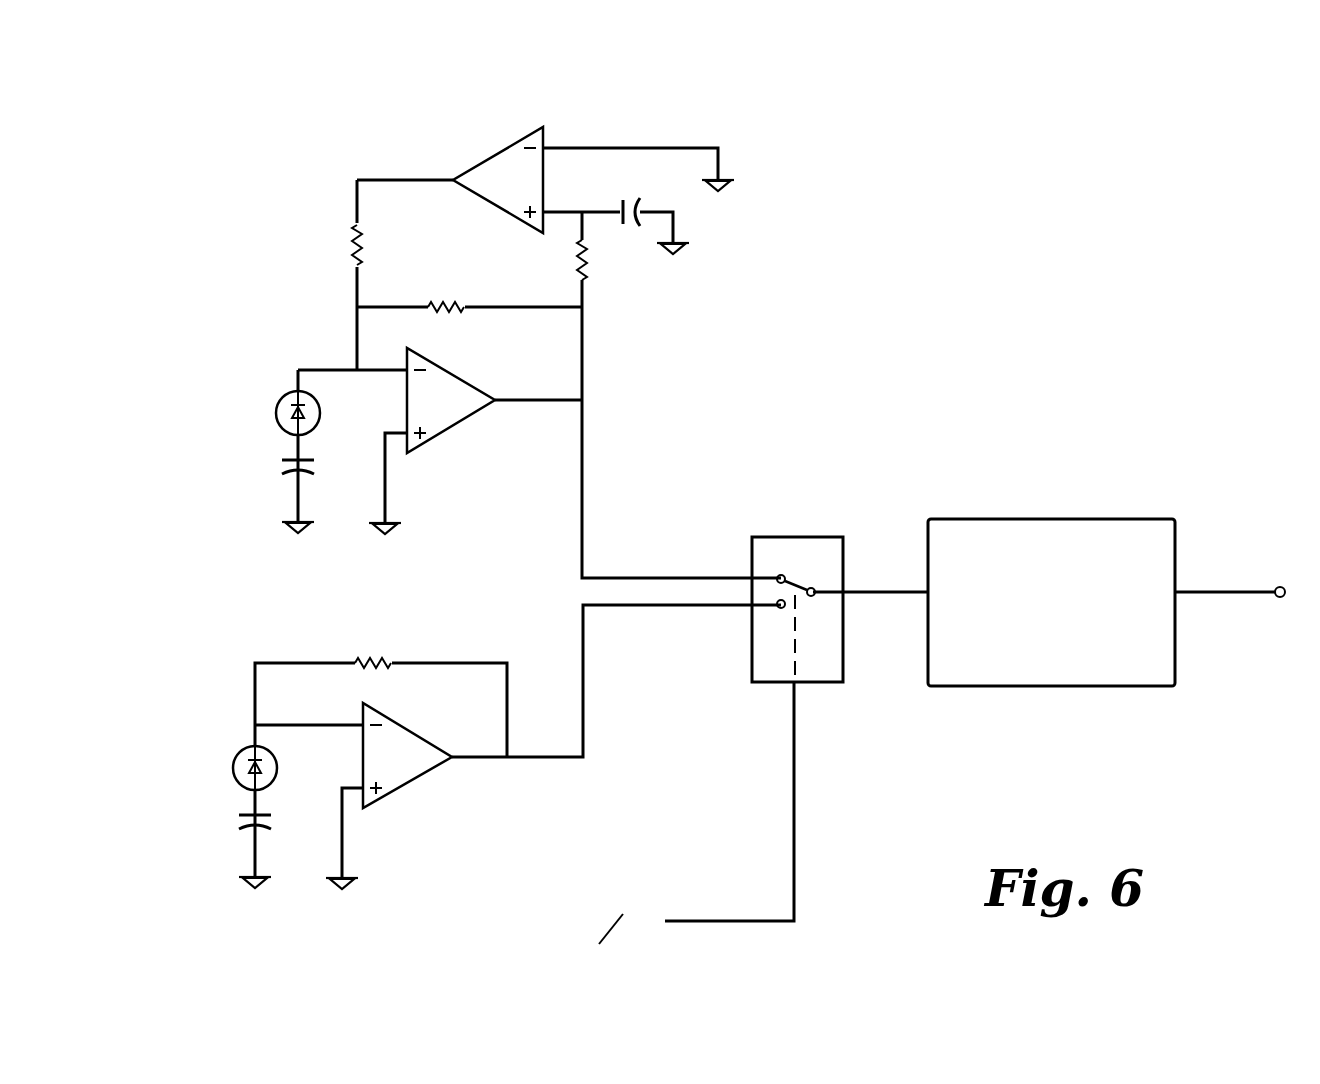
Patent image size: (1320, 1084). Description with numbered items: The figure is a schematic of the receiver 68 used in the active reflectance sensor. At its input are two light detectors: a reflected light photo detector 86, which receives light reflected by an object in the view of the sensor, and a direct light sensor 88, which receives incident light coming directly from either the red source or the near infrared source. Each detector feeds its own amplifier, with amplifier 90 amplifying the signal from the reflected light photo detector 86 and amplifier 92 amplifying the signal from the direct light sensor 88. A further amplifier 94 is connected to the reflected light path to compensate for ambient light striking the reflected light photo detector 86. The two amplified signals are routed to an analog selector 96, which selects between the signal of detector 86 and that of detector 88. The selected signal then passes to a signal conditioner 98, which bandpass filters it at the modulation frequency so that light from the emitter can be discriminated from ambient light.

The receiver 68 is at (922, 441).
The reflected light photo detector 86 is at (278, 400).
The direct light sensor 88 is at (236, 755).
The amplifier 90 is at (442, 432).
The amplifier 92 is at (408, 785).
The amplifier 94 is at (502, 155).
The analog selector 96 is at (791, 537).
The signal conditioner 98 is at (1056, 686).